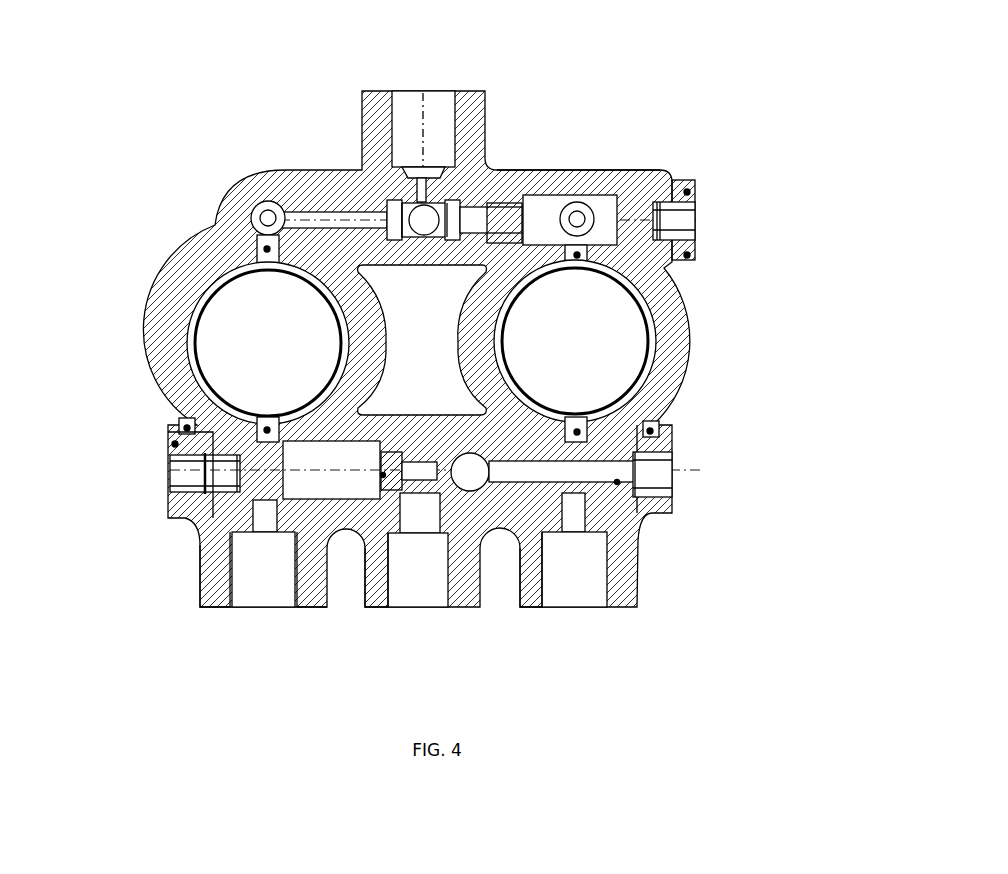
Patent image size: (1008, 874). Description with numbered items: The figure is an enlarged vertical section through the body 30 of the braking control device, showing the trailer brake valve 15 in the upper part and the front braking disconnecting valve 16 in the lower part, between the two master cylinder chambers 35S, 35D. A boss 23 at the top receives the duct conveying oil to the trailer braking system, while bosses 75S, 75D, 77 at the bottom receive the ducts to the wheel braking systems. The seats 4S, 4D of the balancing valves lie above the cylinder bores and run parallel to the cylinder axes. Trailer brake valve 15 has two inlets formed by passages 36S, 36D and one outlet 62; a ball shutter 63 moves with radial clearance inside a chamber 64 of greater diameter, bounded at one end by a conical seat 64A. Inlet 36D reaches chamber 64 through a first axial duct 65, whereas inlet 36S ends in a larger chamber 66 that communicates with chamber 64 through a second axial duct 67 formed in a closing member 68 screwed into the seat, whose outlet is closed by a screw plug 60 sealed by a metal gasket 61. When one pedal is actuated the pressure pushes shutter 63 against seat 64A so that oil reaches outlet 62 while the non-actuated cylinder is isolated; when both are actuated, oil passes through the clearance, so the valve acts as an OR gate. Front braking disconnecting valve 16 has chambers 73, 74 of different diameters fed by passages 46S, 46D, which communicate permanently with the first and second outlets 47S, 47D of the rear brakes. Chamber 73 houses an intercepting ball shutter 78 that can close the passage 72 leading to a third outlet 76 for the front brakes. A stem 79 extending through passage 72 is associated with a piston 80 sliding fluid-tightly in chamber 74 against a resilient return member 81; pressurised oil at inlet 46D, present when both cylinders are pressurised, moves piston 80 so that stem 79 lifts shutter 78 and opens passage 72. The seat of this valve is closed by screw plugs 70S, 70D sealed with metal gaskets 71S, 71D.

The boss 23 is at (470, 102).
The body 30 is at (320, 192).
The outlet 62 is at (440, 110).
The first axial duct 65 is at (350, 217).
The seat 4D is at (256, 212).
The passage 36D is at (267, 249).
The shutter 63 is at (430, 212).
The second axial duct 67 is at (490, 205).
The closing member 68 is at (582, 213).
The seat 4S is at (633, 170).
The screw plug 60 is at (693, 192).
The metal gasket 61 is at (693, 257).
The chamber 66 is at (657, 227).
The passage 36S is at (580, 257).
The cylinder 35D is at (268, 343).
The cylinder 35S is at (575, 341).
The passage 72 is at (515, 375).
The trailer brake valve 15 is at (440, 241).
The chamber 64 is at (410, 241).
The conical seat 64A is at (458, 241).
The metal gasket 71D is at (187, 428).
The passage 46D is at (267, 430).
The metal gasket 71S is at (652, 432).
The chamber 73 is at (590, 488).
The chamber 74 is at (262, 446).
The screw plug 70D is at (173, 445).
The piston 80 is at (298, 482).
The resilient return member 81 is at (393, 450).
The stem 79 is at (383, 475).
The front braking disconnecting valve 16 is at (460, 480).
The passage 46S is at (635, 462).
The screw plug 70S is at (617, 482).
The second outlet 47D is at (273, 588).
The boss 75D is at (242, 540).
The intercepting member 78 is at (362, 518).
The third outlet 76 is at (402, 580).
The boss 77 is at (370, 590).
The first outlet 47S is at (558, 586).
The boss 75S is at (527, 598).